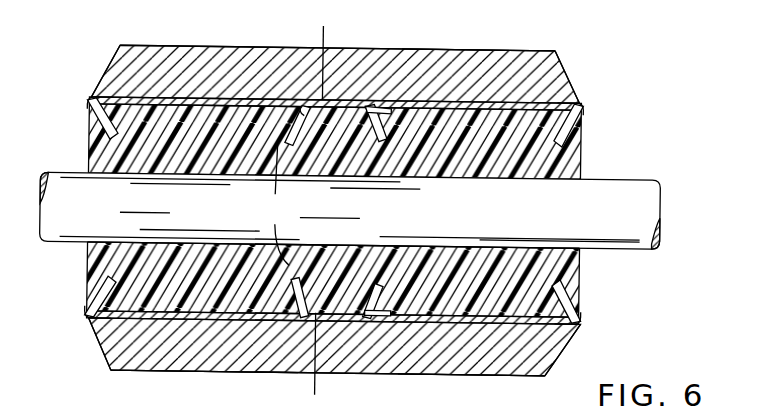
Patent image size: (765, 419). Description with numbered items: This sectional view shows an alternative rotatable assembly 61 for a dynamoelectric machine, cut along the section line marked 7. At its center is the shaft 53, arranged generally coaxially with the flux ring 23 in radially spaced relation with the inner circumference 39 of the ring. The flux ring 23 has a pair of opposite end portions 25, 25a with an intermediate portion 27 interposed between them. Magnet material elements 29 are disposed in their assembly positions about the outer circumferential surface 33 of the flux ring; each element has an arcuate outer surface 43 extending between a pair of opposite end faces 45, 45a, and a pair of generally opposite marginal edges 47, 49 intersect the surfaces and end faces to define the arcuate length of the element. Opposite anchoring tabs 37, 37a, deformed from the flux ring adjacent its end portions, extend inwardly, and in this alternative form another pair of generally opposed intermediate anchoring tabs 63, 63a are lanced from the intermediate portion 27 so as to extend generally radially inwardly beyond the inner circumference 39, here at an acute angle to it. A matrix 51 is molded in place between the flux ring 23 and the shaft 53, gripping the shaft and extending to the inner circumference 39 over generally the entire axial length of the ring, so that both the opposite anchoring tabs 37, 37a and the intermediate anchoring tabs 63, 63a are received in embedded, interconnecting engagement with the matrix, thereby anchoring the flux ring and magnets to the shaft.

The section line 7- 7 is at (331, 33).
The flux ring 23 is at (237, 373).
The end portion 25 is at (87, 101).
The end portion 25a is at (581, 107).
The intermediate portion 27 is at (433, 49).
The magnet material element 29 is at (226, 40).
The outer circumferential surface 33 is at (405, 374).
The opposite anchoring tab 37 is at (110, 133).
The opposite anchoring tab 37a is at (560, 118).
The inner circumference 39 is at (210, 305).
The arcuate outer surface 43 is at (452, 49).
The end face 45 is at (109, 63).
The end face 45a is at (566, 72).
The marginal edge 47 is at (264, 404).
The marginal edge 49 is at (303, 279).
The matrix 51 is at (368, 257).
The shaft 53 is at (231, 218).
The rotatable assembly 61 is at (584, 27).
The intermediate anchoring tab 63 is at (285, 134).
The intermediate anchoring tab 63a is at (388, 134).